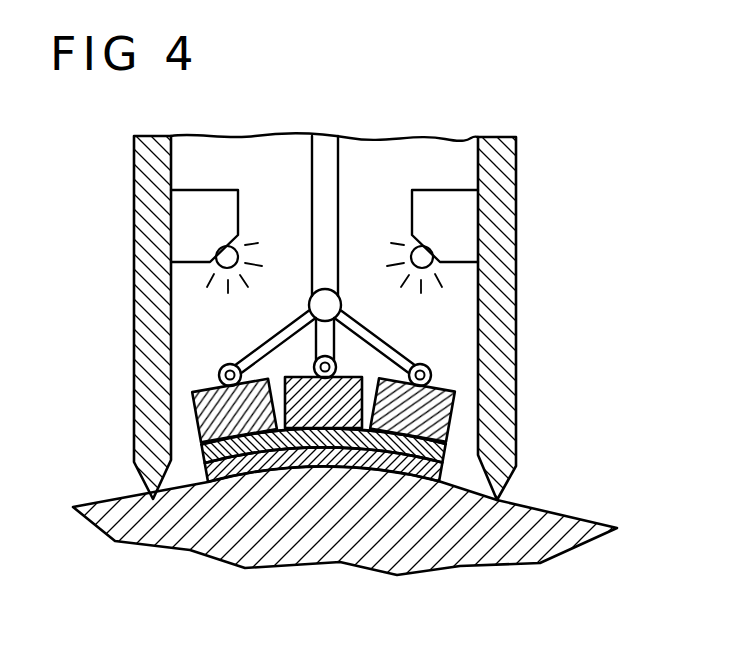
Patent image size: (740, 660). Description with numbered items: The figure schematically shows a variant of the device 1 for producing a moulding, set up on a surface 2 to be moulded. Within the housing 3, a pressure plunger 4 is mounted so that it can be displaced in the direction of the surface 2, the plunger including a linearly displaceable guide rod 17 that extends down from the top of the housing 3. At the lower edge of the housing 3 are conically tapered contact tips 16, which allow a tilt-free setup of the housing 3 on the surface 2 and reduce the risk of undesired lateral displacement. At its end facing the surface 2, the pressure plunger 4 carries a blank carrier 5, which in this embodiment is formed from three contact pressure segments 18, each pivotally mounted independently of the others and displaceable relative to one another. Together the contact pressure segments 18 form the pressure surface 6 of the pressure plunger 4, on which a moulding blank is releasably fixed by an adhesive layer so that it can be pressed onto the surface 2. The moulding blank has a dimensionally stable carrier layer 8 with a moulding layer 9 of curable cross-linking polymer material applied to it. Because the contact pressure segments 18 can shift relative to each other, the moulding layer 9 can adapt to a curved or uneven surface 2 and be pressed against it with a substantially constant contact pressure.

The device 1 is at (335, 353).
The surface 2 is at (591, 521).
The housing 3 is at (323, 318).
The pressure plunger 4 is at (425, 330).
The blank carrier 5 is at (319, 497).
The pressure surface 6 is at (253, 440).
The carrier layer 8 is at (373, 440).
The moulding layer 9 is at (418, 467).
The contact tips 16 is at (150, 477).
The guide rod 17 is at (325, 146).
The contact pressure segments 18 is at (217, 418).